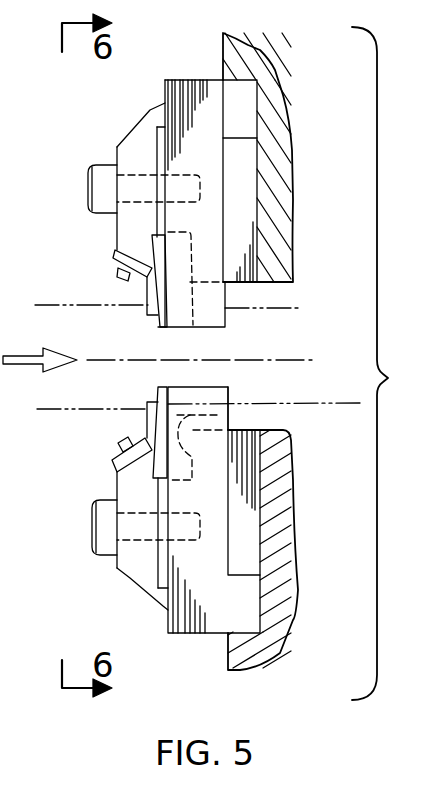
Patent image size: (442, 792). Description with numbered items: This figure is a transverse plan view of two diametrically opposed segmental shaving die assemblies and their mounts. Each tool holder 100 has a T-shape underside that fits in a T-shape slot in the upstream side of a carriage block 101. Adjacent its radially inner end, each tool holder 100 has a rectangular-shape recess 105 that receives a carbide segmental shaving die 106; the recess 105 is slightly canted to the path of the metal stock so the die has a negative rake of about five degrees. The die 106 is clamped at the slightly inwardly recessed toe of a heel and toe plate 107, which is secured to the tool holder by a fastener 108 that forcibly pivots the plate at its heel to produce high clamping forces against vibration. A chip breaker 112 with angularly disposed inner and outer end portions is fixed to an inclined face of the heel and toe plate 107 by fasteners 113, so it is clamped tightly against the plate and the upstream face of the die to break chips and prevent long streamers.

The tool holder 100 is at (195, 80).
The carriage block 101 is at (267, 68).
The recess 105 is at (226, 418).
The segmental shaving die 106 is at (162, 235).
The heel and toe plate 107 is at (130, 588).
The fastener 108 is at (90, 195).
The chip breaker 112 is at (114, 253).
The fasteners 113 is at (118, 442).